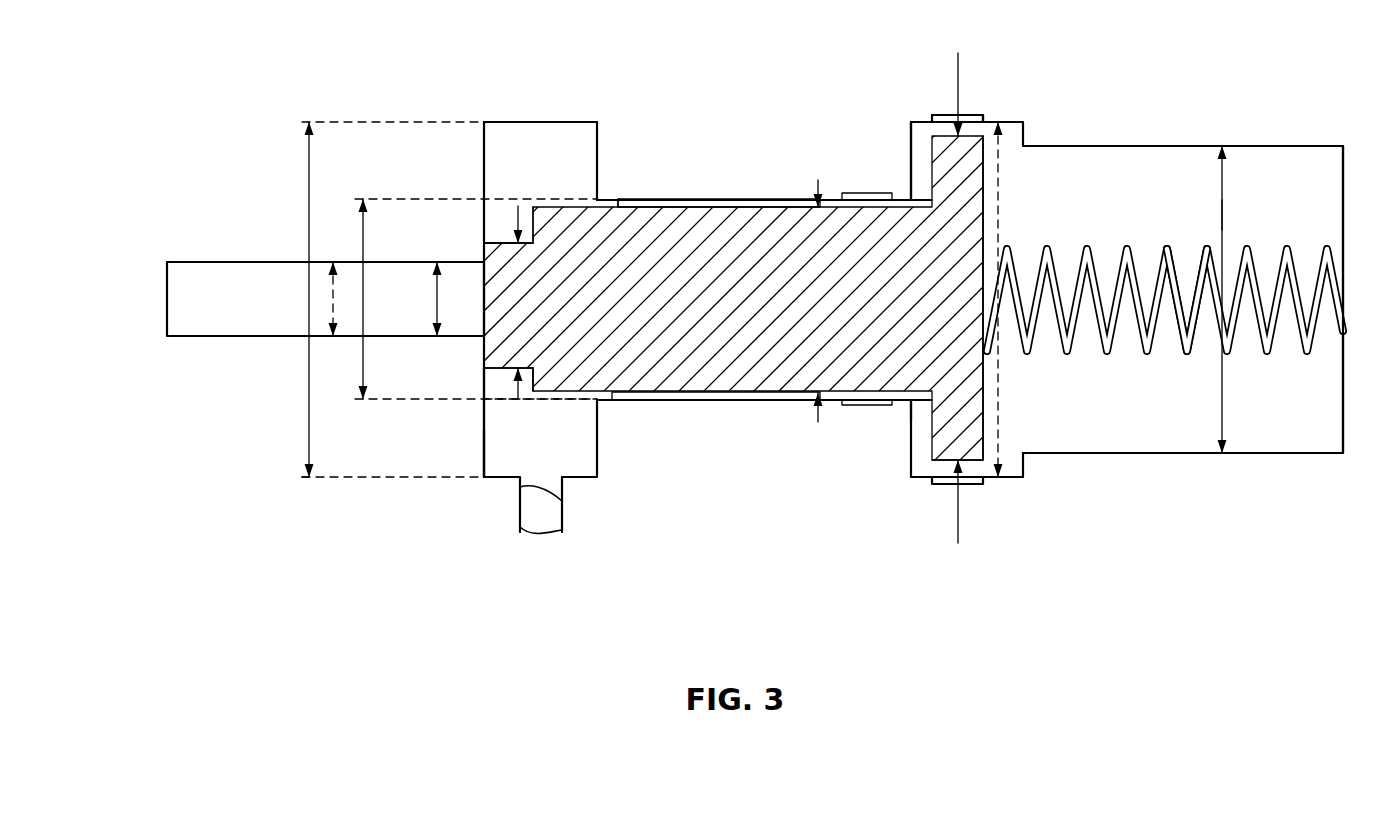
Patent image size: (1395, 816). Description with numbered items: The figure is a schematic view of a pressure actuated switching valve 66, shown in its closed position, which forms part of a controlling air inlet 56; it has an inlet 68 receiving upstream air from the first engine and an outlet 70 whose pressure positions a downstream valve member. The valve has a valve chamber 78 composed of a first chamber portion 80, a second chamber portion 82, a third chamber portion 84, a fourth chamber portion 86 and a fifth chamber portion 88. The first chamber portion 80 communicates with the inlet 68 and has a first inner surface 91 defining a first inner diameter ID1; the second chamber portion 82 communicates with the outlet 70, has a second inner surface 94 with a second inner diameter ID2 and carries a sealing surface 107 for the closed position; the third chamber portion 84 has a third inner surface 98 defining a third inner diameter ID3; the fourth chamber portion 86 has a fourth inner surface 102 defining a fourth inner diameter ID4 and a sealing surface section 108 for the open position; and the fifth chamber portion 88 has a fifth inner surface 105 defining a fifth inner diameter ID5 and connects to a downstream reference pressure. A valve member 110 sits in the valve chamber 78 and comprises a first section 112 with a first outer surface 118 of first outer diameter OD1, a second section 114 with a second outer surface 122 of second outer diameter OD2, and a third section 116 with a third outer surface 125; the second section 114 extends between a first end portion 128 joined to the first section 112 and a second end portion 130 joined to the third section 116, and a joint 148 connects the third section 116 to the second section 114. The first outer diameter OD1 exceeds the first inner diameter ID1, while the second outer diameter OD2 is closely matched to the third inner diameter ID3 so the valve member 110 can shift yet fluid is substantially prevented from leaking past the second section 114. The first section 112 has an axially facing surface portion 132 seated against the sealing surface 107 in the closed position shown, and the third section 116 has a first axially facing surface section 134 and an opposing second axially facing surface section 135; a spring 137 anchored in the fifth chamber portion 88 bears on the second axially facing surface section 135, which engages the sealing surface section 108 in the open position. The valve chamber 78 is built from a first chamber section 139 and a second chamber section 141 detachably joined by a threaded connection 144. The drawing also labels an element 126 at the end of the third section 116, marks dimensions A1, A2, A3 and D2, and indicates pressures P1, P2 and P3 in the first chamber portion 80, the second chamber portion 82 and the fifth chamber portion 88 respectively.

The controlling air inlet 56 is at (1076, 628).
The pressure actuated switching valve 66 is at (1143, 456).
The inlet 68 is at (193, 323).
The outlet 70 is at (563, 505).
The valve chamber 78 is at (480, 129).
The first chamber portion 80 is at (233, 262).
The second chamber portion 82 is at (566, 120).
The third chamber portion 84 is at (652, 401).
The fourth chamber portion 86 is at (926, 466).
The fifth chamber portion 88 is at (1262, 455).
The first inner surface 91 is at (400, 325).
The second inner surface 94 is at (524, 122).
The third inner surface 98 is at (772, 401).
The fourth inner surface 102 is at (930, 140).
The fifth inner surface 105 is at (1182, 150).
The sealing surface 107 is at (913, 160).
The sealing surface section 108 is at (1026, 132).
The valve member 110 is at (551, 406).
The first section 112 is at (484, 447).
The second section 114 is at (617, 206).
The third section 116 is at (975, 130).
The first outer surface 118 is at (503, 238).
The second outer surface 122 is at (612, 401).
The third outer surface 125 is at (968, 462).
The upper end cap 126 is at (958, 67).
The first end portion 128 is at (516, 210).
The second end portion 130 is at (931, 410).
The axially facing surface portion 132 is at (462, 299).
The first axially facing surface section 134 is at (929, 452).
The second axially facing surface section 135 is at (985, 362).
The spring 137 is at (1182, 358).
The first chamber section 139 is at (707, 200).
The second chamber section 141 is at (1290, 146).
The threaded connection 144 is at (998, 52).
The joint 148 is at (944, 82).
The area A1 is at (432, 282).
The area A2 is at (362, 245).
The area A3 is at (1220, 150).
The diameter D2 is at (306, 172).
The first inner diameter ID1 is at (322, 290).
The second inner diameter ID2 is at (306, 424).
The third inner diameter ID3 is at (730, 404).
The fourth inner diameter ID4 is at (1023, 299).
The fifth inner diameter ID5 is at (1225, 216).
The first outer diameter OD1 is at (484, 402).
The second outer diameter OD2 is at (818, 182).
The pressure P1 is at (204, 311).
The pressure P2 is at (501, 445).
The pressure P3 is at (1302, 208).